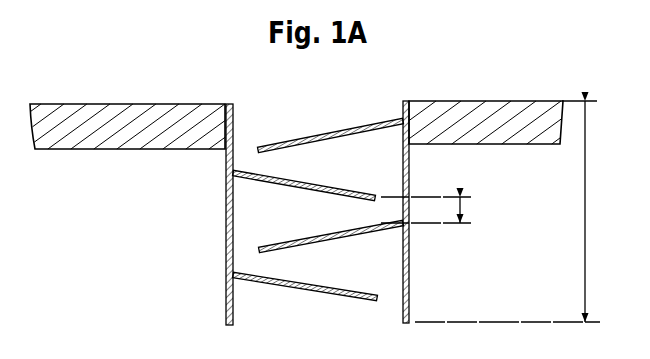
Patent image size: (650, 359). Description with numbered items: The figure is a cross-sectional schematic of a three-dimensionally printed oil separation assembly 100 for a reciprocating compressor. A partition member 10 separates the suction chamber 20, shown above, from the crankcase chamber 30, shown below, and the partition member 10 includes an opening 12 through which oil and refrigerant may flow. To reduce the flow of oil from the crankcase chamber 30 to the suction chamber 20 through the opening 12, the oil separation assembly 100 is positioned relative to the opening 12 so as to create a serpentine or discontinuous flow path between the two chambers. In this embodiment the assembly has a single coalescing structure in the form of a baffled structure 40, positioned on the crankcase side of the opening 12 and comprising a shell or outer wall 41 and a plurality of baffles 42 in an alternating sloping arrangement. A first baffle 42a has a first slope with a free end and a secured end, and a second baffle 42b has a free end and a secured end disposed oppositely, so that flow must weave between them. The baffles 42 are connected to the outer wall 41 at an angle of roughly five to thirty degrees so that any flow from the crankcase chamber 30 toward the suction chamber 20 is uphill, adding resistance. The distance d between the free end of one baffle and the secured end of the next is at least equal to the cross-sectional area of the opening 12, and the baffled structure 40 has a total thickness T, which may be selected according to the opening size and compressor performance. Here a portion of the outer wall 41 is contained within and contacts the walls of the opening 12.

The 3D-printed oil separation assembly 100 is at (104, 209).
The partition member 10 is at (530, 101).
The suction chamber 20 is at (186, 88).
The crankcase chamber 30 is at (188, 344).
The opening 12 is at (381, 91).
The baffled structure 40 is at (421, 296).
The outer wall 41 is at (410, 168).
The baffles 42 is at (375, 232).
The first baffle 42a is at (310, 138).
The second baffle 42b is at (258, 180).
The total thickness T is at (586, 181).
The distance d is at (462, 210).